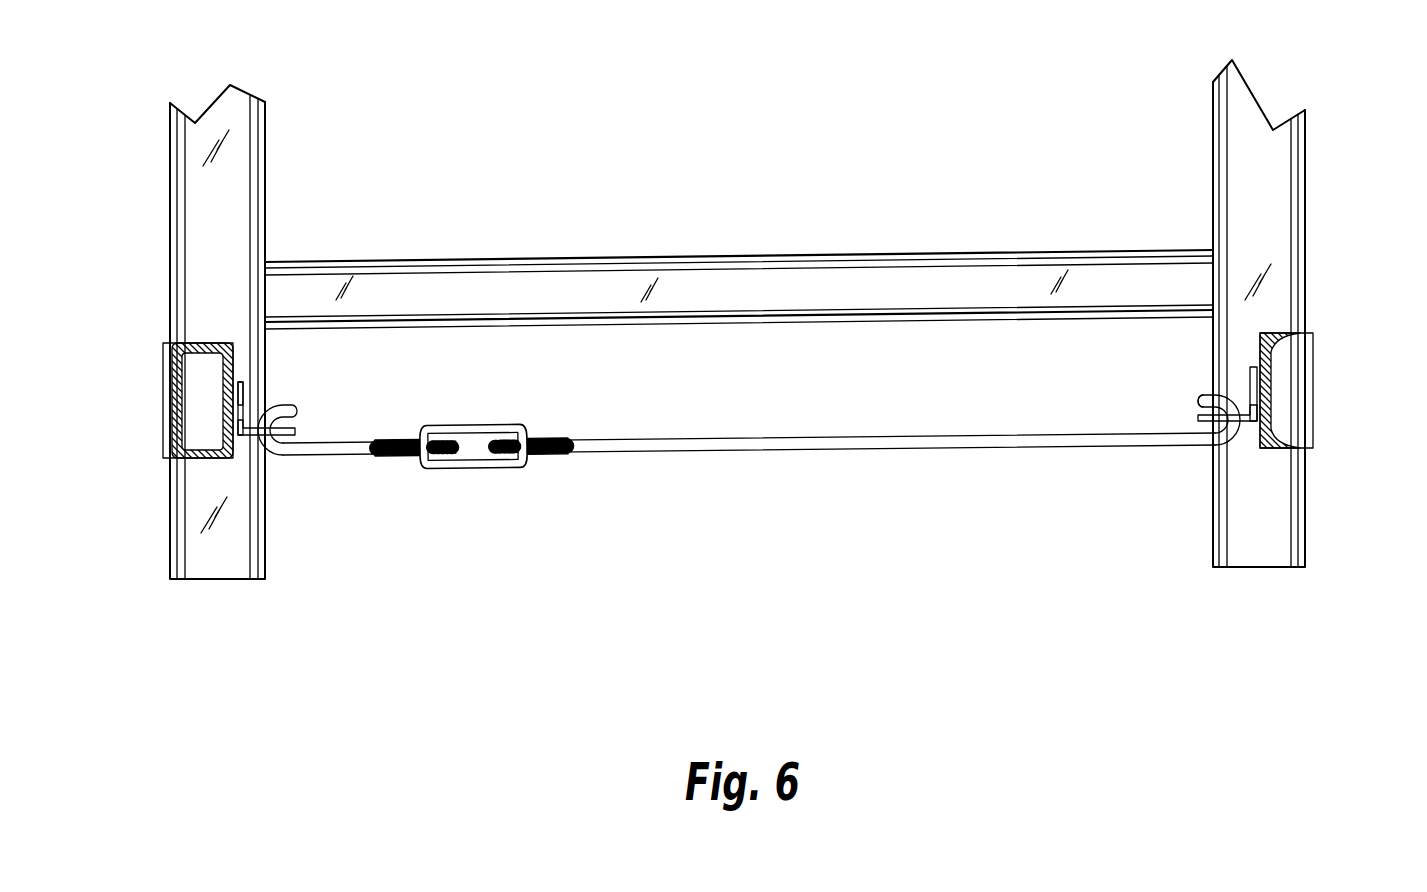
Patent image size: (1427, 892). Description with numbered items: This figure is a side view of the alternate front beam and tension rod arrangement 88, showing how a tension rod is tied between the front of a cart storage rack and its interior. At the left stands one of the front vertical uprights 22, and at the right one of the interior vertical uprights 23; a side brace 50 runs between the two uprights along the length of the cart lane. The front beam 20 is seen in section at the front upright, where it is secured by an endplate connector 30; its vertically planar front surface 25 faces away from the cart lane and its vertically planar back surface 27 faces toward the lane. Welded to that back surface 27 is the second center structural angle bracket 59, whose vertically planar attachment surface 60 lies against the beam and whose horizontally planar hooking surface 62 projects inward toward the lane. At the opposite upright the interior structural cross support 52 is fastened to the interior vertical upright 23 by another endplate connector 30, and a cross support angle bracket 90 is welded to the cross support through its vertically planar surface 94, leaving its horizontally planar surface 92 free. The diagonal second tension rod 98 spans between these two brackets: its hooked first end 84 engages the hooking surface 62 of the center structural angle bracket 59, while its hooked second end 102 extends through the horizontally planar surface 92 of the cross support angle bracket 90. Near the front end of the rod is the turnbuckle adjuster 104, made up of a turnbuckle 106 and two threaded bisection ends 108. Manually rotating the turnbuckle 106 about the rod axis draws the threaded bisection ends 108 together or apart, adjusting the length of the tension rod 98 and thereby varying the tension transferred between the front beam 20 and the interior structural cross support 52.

The front beam 20 is at (176, 402).
The front vertical uprights 22 is at (268, 332).
The interior vertical uprights 23 is at (1270, 197).
The front surface 25 is at (173, 439).
The back surface 27 is at (240, 358).
The endplate connectors 30 is at (737, 378).
The side braces 50 is at (735, 285).
The interior structural cross support 52 is at (1313, 363).
The second center structural angle bracket 59 is at (243, 383).
The vertically planar attachment surface 60 is at (334, 369).
The horizontally planar hooking surface 62 is at (240, 453).
The hooked first end 84 is at (302, 410).
The front beam and tension rod arrangement 88 is at (761, 319).
The cross support angle brackets 90 is at (1172, 437).
The horizontally planar surfaces 92 is at (1256, 425).
The vertically planar surfaces 94 is at (1265, 382).
The second tension rod 98 is at (755, 437).
The hooked second end 102 is at (1147, 387).
The turnbuckle adjuster 104 is at (761, 439).
The turnbuckle 106 is at (471, 448).
The threaded bisection ends 108 is at (500, 463).